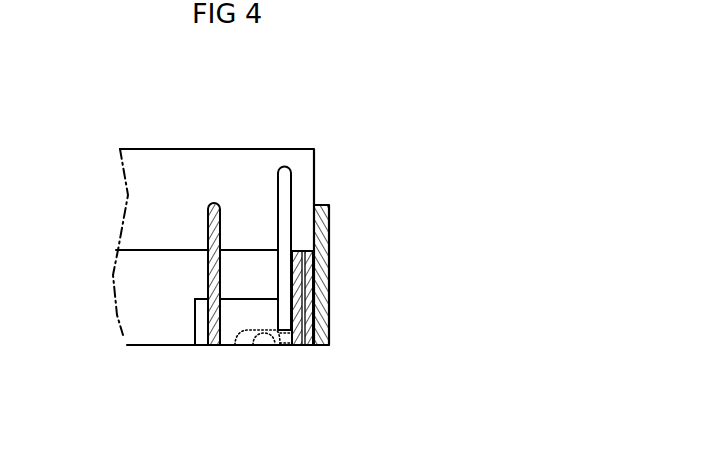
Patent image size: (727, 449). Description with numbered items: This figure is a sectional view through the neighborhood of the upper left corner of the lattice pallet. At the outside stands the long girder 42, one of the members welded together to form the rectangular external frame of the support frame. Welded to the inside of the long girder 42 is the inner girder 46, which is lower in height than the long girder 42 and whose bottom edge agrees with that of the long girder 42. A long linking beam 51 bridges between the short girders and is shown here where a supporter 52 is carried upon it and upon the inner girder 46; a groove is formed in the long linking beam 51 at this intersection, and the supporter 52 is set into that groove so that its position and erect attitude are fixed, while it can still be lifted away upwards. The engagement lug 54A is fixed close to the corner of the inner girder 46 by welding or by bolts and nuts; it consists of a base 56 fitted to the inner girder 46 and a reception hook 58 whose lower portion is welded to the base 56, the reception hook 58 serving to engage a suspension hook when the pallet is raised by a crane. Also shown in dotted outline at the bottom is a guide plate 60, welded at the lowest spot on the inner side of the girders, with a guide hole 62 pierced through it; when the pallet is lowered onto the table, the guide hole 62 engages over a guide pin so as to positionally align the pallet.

The long girder 42 is at (330, 257).
The inner girder 46 is at (308, 347).
The long linking beam 51 is at (208, 220).
The supporter 52 is at (198, 148).
The engagement lug 54A is at (397, 93).
The base 56 is at (297, 253).
The reception hook 58 is at (284, 167).
The guide plate 60 is at (237, 340).
The guide hole 62 is at (280, 347).